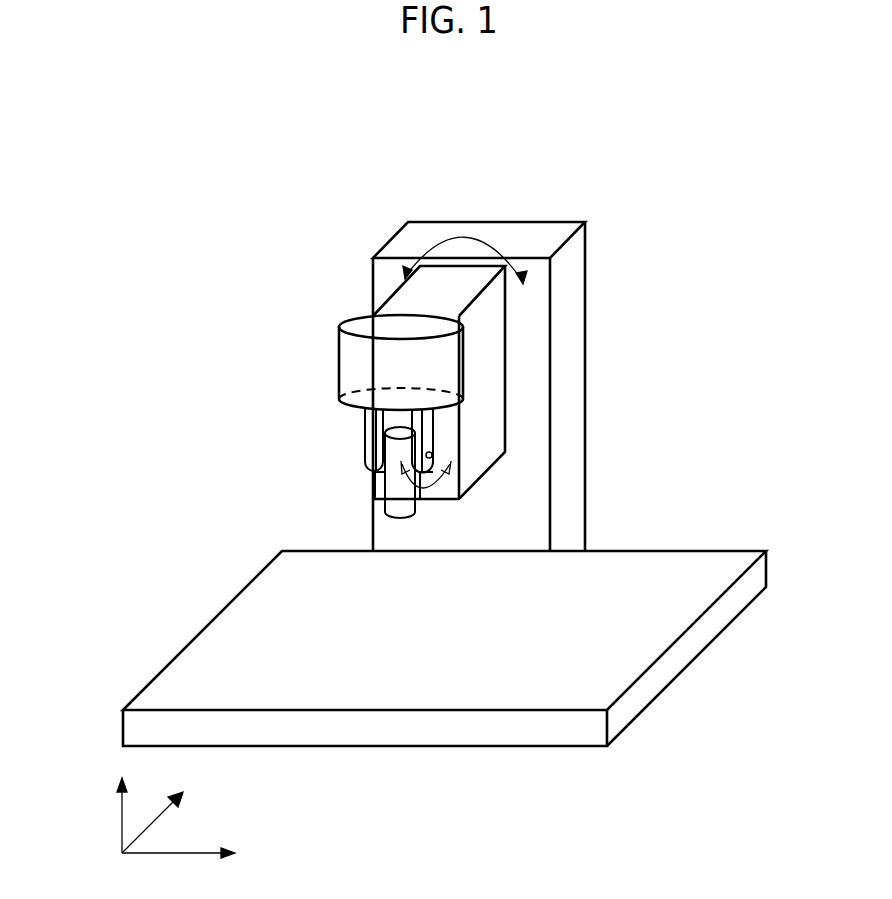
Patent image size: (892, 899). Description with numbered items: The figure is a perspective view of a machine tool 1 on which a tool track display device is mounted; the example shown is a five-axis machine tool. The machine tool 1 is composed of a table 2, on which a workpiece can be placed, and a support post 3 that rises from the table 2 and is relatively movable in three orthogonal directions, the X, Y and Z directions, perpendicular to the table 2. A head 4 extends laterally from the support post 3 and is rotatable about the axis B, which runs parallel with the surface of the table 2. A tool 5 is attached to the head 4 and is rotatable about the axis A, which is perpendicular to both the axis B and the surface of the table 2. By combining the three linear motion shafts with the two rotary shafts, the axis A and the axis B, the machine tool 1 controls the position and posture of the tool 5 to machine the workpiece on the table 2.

The machine tool 1 is at (670, 323).
The table 2 is at (628, 652).
The support post 3 is at (578, 438).
The head 4 is at (316, 337).
The tool 5 is at (392, 488).
The axis A is at (437, 493).
The axis B is at (465, 236).